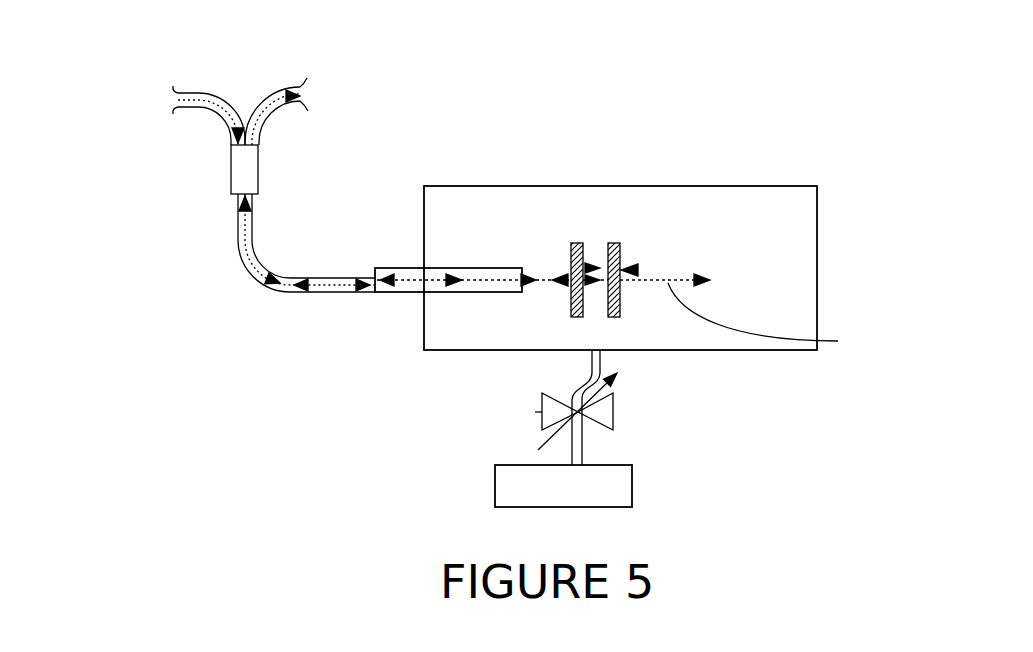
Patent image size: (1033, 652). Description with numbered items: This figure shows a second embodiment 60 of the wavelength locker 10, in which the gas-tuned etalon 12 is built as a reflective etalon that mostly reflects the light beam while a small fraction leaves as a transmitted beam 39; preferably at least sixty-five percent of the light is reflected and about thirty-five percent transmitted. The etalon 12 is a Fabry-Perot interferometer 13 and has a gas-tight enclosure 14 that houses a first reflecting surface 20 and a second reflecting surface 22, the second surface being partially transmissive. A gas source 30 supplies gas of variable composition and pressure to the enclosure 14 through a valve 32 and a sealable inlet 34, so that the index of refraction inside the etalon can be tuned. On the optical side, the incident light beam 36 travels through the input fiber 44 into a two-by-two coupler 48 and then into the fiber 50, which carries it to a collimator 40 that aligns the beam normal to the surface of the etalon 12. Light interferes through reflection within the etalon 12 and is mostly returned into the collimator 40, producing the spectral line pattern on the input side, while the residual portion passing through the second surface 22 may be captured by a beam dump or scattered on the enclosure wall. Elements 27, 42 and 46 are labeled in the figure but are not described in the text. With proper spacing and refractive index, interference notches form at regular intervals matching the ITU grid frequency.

The wavelength locker 10 is at (220, 144).
The second embodiment 60 is at (197, 43).
The gas-tuned etalon 12 is at (707, 222).
The Fabry-Perot interferometer 13 is at (574, 165).
The enclosure 14 is at (698, 362).
The first reflecting surface 20 is at (592, 249).
The second reflecting surface 22 is at (571, 268).
The reflected light path 27 is at (630, 270).
The gas source 30 is at (578, 498).
The valve 32 is at (613, 412).
The inlet 34 is at (596, 336).
The incident light beam 36 is at (266, 288).
The transmitted beam 39 is at (775, 318).
The collimator 40 is at (417, 268).
The connector end 42 is at (374, 292).
The input fiber 44 is at (205, 110).
The second fiber branch 46 is at (270, 113).
The 2×2 coupler 48 is at (231, 170).
The fiber 50 is at (255, 244).